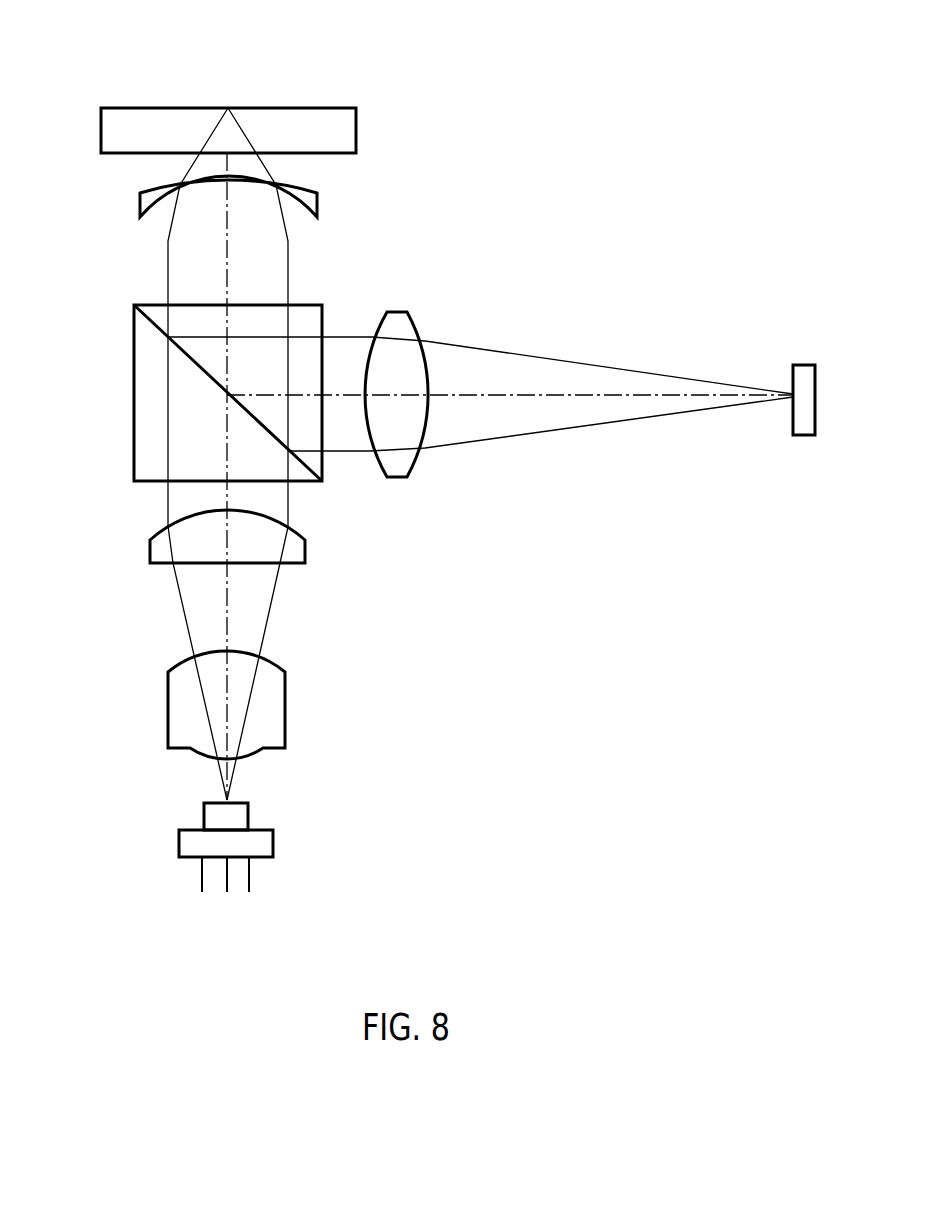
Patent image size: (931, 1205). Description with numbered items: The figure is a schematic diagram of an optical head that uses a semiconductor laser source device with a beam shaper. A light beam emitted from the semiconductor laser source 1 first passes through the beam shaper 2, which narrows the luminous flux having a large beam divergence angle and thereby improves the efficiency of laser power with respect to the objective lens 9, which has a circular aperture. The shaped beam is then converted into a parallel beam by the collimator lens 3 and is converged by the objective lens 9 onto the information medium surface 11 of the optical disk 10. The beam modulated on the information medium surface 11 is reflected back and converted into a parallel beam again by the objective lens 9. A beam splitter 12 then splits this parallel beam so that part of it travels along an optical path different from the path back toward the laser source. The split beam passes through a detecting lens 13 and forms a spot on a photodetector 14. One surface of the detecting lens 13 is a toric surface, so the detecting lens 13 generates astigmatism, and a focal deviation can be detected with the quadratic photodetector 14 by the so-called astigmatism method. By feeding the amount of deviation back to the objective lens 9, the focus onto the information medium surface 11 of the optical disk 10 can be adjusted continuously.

The semiconductor laser source 1 is at (192, 845).
The beam shaper 2 is at (180, 712).
The collimator lens 3 is at (160, 552).
The objective lens 9 is at (307, 208).
The optical disk 10 is at (348, 133).
The information medium surface 11 is at (250, 107).
The beam splitter 12 is at (145, 355).
The detecting lens 13 is at (405, 323).
The photodetector 14 is at (795, 423).